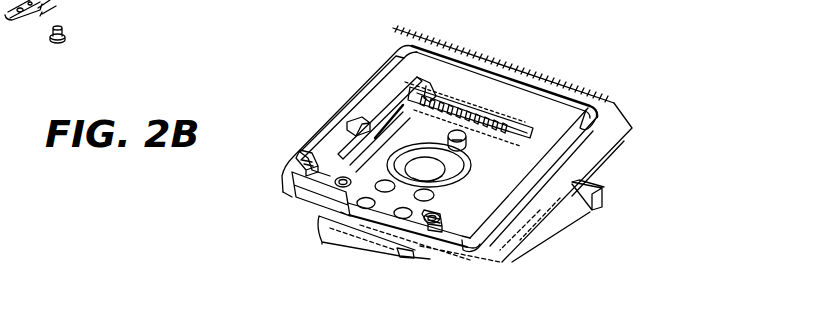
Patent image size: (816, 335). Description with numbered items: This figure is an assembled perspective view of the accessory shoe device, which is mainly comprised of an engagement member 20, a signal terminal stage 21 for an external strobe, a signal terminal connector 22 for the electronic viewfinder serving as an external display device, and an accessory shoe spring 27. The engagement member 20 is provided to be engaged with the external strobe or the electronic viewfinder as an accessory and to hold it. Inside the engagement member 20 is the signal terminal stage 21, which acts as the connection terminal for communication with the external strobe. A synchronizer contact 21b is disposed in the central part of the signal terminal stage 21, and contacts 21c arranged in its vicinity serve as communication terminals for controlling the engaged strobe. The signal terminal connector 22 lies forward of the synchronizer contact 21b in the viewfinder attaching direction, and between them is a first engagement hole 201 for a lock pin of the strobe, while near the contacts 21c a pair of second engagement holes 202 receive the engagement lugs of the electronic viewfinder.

The engagement member 20 is at (523, 106).
The signal terminal stage 21 is at (493, 238).
The synchronizer contact 21b is at (435, 170).
The contacts 21c is at (440, 254).
The signal terminal connector 22 is at (455, 140).
The accessory shoe spring 27 is at (322, 186).
The first engagement hole 201 is at (396, 126).
The second engagement holes 202 is at (313, 170).